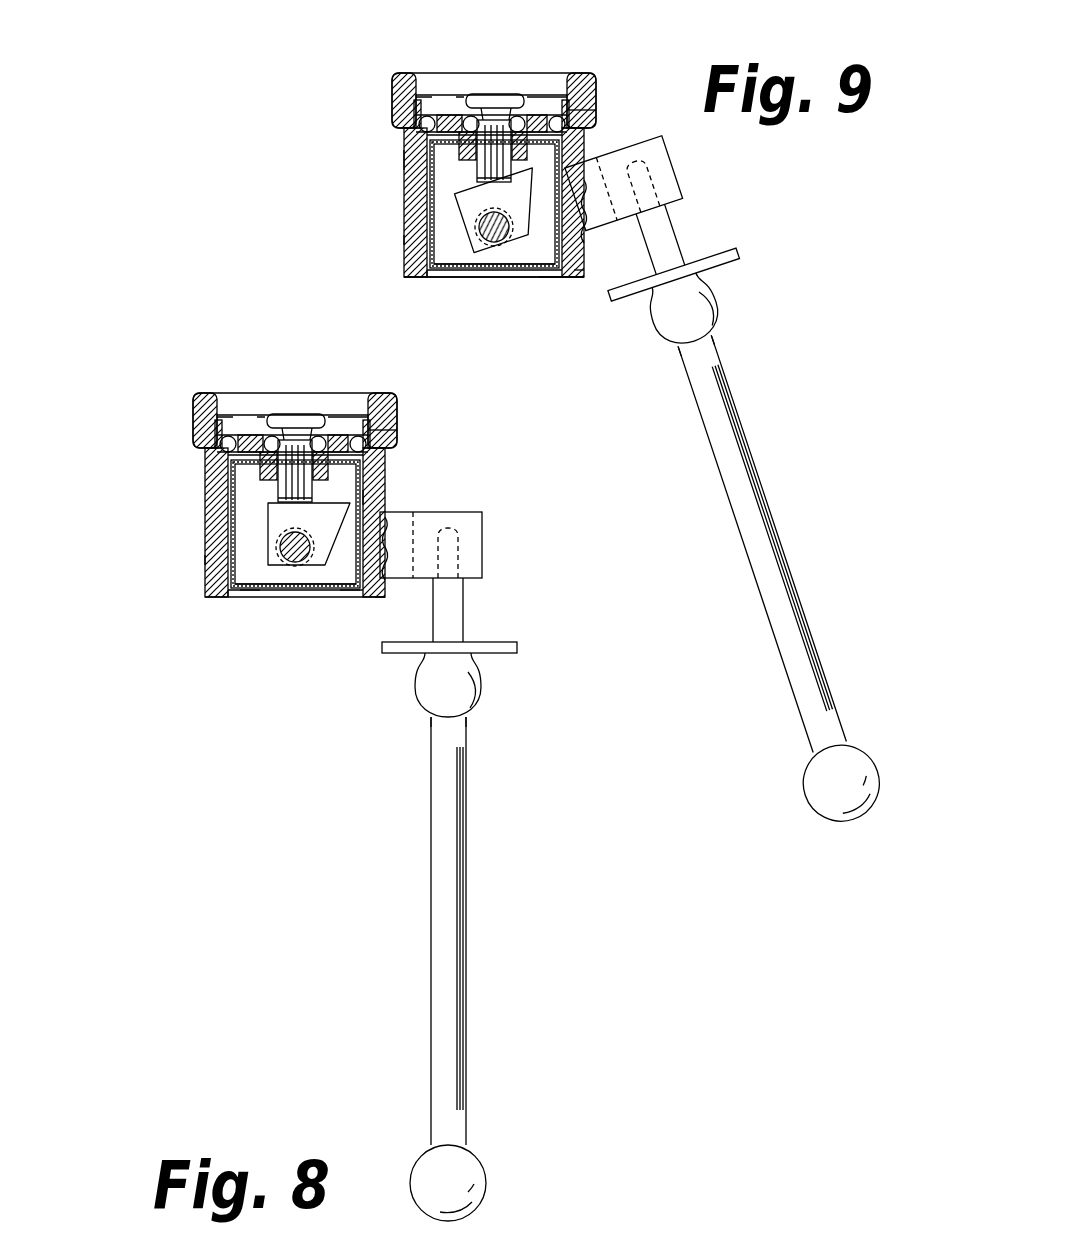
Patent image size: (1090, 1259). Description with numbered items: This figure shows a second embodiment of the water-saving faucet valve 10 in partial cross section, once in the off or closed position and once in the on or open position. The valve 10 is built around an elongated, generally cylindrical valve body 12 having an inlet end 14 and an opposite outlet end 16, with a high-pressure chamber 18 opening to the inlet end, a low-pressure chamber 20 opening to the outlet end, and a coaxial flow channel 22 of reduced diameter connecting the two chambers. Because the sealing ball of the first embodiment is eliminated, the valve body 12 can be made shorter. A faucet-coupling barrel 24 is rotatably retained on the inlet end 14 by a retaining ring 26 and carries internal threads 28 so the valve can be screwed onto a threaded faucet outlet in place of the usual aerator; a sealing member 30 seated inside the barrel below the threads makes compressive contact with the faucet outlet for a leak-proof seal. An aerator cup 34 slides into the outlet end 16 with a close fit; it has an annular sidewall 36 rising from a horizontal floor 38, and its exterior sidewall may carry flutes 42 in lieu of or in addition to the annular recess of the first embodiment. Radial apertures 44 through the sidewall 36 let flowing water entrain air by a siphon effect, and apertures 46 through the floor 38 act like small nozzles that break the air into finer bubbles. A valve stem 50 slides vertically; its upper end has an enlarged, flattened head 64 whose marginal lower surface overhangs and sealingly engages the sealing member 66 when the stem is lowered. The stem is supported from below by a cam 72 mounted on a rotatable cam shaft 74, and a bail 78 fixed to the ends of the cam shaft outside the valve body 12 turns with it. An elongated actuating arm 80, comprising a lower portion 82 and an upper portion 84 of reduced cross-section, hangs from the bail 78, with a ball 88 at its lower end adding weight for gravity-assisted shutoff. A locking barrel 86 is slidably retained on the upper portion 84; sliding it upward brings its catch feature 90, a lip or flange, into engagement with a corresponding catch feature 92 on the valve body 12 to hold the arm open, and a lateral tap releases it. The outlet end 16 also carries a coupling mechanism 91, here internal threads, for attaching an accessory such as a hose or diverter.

In FIG. 9, the water-saving faucet valve 10 is at (584, 70).
In FIG. 8, the valve body 12 is at (200, 503).
In FIG. 9, the valve body 12 is at (400, 185).
In FIG. 8, the inlet end 14 is at (236, 393).
In FIG. 9, the inlet end 14 is at (435, 72).
In FIG. 8, the outlet end 16 is at (232, 596).
In FIG. 9, the outlet end 16 is at (432, 276).
In FIG. 8, the high-pressure chamber 18 is at (292, 408).
In FIG. 9, the high-pressure chamber 18 is at (491, 88).
In FIG. 8, the low-pressure chamber 20 is at (248, 572).
In FIG. 9, the low-pressure chamber 20 is at (445, 255).
In FIG. 8, the coaxial flow channel 22 is at (325, 472).
In FIG. 9, the coaxial flow channel 22 is at (512, 122).
In FIG. 8, the faucet-coupling barrel 24 is at (397, 415).
In FIG. 9, the faucet-coupling barrel 24 is at (596, 95).
In FIG. 8, the retaining ring 26 is at (214, 438).
In FIG. 9, the retaining ring 26 is at (400, 82).
In FIG. 8, the internal threads 28 is at (355, 435).
In FIG. 9, the internal threads 28 is at (554, 112).
In FIG. 8, the sealing member 30 is at (397, 398).
In FIG. 9, the sealing member 30 is at (594, 76).
In FIG. 8, the aerator cup 34 is at (233, 525).
In FIG. 9, the aerator cup 34 is at (432, 205).
In FIG. 8, the annular sidewall 36 is at (385, 497).
In FIG. 9, the annular sidewall 36 is at (404, 162).
In FIG. 8, the horizontal floor 38 is at (247, 590).
In FIG. 8, the flutes 42 is at (214, 560).
In FIG. 9, the flutes 42 is at (412, 240).
In FIG. 8, the radial apertures 44 is at (330, 468).
In FIG. 9, the radial apertures 44 is at (562, 148).
In FIG. 8, the apertures 46 is at (350, 590).
In FIG. 8, the valve stem 50 is at (276, 498).
In FIG. 9, the valve stem 50 is at (475, 178).
In FIG. 8, the enlarged flattened head 64 is at (297, 414).
In FIG. 9, the enlarged flattened head 64 is at (495, 94).
In FIG. 8, the sealing member 66 is at (309, 430).
In FIG. 9, the sealing member 66 is at (507, 110).
In FIG. 8, the cam 72 is at (320, 566).
In FIG. 9, the cam 72 is at (525, 238).
In FIG. 8, the cam shaft 74 is at (300, 562).
In FIG. 9, the cam shaft 74 is at (496, 242).
In FIG. 8, the bail 78 is at (482, 545).
In FIG. 9, the bail 78 is at (662, 162).
In FIG. 8, the actuating arm 80 is at (432, 925).
In FIG. 9, the actuating arm 80 is at (736, 540).
In FIG. 8, the lower portion 82 is at (468, 760).
In FIG. 9, the lower portion 82 is at (731, 368).
In FIG. 8, the upper portion 84 is at (464, 598).
In FIG. 9, the upper portion 84 is at (673, 215).
In FIG. 8, the locking barrel 86 is at (481, 688).
In FIG. 9, the locking barrel 86 is at (716, 297).
In FIG. 8, the ball 88 is at (418, 1172).
In FIG. 9, the ball 88 is at (806, 795).
In FIG. 8, the catch feature 90 is at (517, 645).
In FIG. 9, the catch feature 90 is at (736, 252).
In FIG. 8, the coupling mechanism 91 is at (385, 597).
In FIG. 9, the coupling mechanism 91 is at (545, 283).
In FIG. 9, the catch feature 92 is at (582, 266).